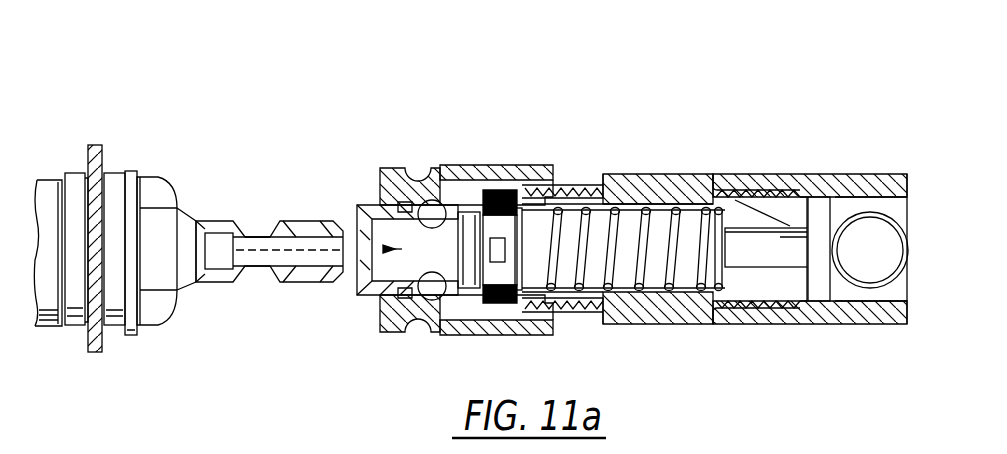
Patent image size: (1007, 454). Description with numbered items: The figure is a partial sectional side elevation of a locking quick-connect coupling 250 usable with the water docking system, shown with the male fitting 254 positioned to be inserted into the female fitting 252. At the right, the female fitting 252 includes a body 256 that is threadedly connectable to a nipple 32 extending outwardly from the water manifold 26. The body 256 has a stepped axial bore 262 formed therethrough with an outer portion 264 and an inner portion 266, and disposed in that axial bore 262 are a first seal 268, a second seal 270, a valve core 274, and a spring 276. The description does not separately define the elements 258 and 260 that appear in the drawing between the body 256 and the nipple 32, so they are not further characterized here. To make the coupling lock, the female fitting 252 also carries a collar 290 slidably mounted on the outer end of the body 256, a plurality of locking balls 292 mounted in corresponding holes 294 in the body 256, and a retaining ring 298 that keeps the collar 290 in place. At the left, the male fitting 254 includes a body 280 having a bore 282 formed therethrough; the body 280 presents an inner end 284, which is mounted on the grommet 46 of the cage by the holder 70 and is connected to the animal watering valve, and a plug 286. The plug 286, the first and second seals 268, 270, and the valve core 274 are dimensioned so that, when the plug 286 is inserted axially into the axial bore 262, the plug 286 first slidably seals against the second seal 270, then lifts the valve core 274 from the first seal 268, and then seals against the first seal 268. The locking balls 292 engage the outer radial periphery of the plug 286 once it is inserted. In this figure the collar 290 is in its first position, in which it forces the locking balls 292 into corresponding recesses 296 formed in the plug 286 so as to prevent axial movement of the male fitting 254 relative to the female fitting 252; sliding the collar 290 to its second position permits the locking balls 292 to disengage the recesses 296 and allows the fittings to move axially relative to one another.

The water manifold 26 is at (870, 200).
The nipple 32 is at (828, 150).
The grommet 46 is at (102, 152).
The holder 70 is at (119, 334).
The locking quick-connect coupling 250 is at (652, 134).
The female fitting 252 is at (718, 178).
The male fitting 254 is at (178, 198).
The body 256 is at (607, 324).
The retaining ring 258 is at (818, 302).
The coupling tube 260 is at (378, 262).
The axial bore 262 is at (776, 249).
The outer portion 264 is at (392, 294).
The inner portion 266 is at (650, 212).
The first seal 268 is at (500, 195).
The second seal 270 is at (470, 289).
The valve core 274 is at (550, 255).
The spring 276 is at (662, 290).
The body 280 is at (198, 292).
The bore 282 is at (295, 258).
The inner end 284 is at (48, 180).
The plug 286 is at (292, 222).
The collar 290 is at (470, 165).
The locking balls 292 is at (431, 288).
The holes 294 is at (448, 207).
The recesses 296 is at (257, 236).
The retaining ring 298 is at (406, 205).